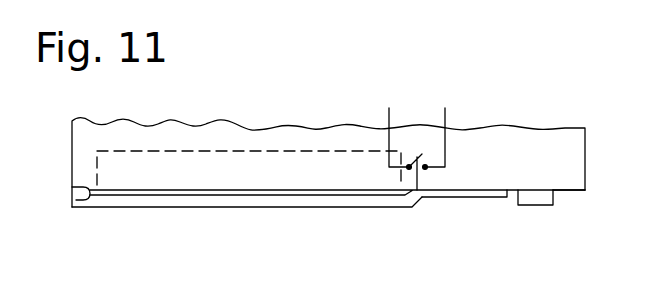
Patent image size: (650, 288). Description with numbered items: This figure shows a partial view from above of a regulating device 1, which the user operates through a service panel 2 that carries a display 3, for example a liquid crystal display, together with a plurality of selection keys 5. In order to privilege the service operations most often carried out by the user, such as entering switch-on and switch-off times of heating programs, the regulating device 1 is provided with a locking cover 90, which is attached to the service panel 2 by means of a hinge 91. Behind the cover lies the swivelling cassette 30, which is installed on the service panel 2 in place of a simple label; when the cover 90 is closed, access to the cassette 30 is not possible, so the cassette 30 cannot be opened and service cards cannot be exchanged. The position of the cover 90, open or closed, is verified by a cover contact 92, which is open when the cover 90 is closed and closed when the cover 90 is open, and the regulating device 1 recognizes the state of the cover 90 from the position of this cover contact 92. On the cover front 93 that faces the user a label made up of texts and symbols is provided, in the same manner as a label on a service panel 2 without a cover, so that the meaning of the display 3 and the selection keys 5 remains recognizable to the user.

The regulating device 1 is at (597, 173).
The service panel 2 is at (568, 192).
The display 3 is at (468, 198).
The selection keys 5 is at (535, 205).
The cassette 30 is at (273, 163).
The locking cover 90 is at (133, 201).
The hinge 91 is at (71, 192).
The cover contact 92 is at (416, 152).
The cover front 93 is at (244, 206).